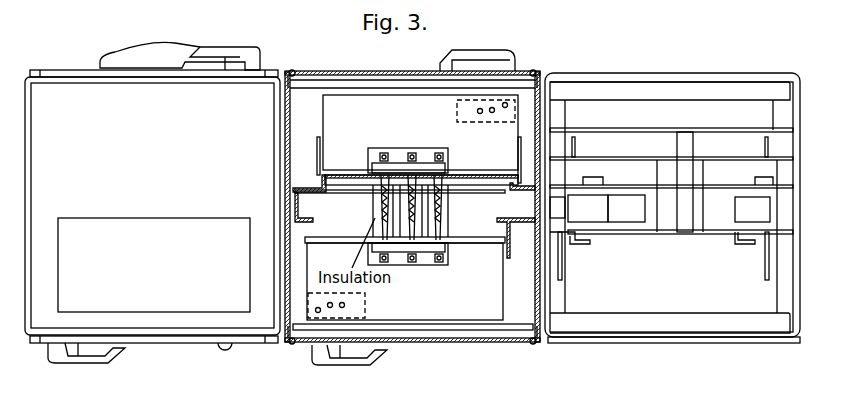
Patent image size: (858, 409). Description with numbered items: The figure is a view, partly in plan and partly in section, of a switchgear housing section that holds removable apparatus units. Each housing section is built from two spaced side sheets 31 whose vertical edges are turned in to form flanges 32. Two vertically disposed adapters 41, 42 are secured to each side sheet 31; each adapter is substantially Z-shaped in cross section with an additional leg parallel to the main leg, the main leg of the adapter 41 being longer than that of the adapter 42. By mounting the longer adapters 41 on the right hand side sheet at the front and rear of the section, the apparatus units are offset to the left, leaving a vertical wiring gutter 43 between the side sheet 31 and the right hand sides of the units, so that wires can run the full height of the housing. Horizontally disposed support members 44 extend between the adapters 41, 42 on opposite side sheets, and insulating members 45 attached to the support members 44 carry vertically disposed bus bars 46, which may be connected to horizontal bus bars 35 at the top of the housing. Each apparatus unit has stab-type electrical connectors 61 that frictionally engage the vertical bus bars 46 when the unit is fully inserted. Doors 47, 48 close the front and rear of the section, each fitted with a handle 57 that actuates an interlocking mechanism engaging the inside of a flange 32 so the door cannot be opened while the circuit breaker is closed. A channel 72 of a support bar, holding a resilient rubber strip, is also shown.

The side sheet 31 is at (298, 100).
The flange 32 is at (292, 70).
The horizontal bus bar 35 is at (633, 128).
The adapter 41 is at (314, 186).
The adapter 42 is at (300, 218).
The wiring gutter 43 is at (313, 112).
The support member 44 is at (357, 183).
The insulating member 45 is at (372, 193).
The vertical bus bar 46 is at (440, 214).
The door 47 is at (168, 343).
The door 48 is at (447, 343).
The handle 57 is at (90, 365).
The electrical connector 61 is at (440, 180).
The channel 72 is at (372, 328).